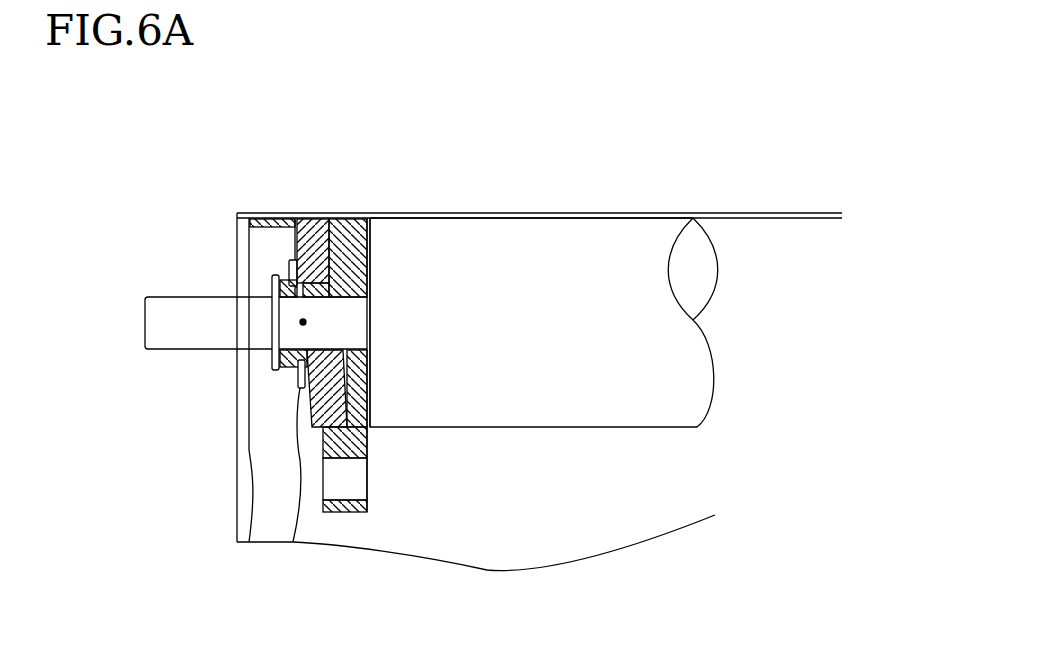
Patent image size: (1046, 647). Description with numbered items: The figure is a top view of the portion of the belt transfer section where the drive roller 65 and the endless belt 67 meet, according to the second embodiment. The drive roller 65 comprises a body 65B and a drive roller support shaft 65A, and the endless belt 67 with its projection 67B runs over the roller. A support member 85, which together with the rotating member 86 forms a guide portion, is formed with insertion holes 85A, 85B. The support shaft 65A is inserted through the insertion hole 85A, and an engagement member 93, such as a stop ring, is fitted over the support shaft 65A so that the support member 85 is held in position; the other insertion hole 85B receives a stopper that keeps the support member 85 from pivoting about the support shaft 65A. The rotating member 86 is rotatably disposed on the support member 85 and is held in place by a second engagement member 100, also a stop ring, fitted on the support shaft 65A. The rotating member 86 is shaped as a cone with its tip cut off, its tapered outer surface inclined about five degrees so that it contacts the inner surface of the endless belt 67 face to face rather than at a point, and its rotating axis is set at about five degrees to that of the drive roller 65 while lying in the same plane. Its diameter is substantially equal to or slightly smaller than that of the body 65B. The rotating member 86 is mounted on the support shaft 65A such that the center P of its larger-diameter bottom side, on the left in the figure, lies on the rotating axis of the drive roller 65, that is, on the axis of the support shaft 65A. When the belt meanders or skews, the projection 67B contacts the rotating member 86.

The drive roller 65 is at (431, 321).
The drive roller support shaft 65A is at (182, 307).
The body of the drive roller 65B is at (553, 237).
The endless belt 67 is at (782, 213).
The projection 67B is at (237, 240).
The support member 85 is at (340, 303).
The insertion hole 85A is at (370, 313).
The insertion hole 85B is at (347, 483).
The rotating member 86 is at (302, 300).
The engagement member 93 is at (297, 310).
The engagement member 100 is at (297, 388).
The center P is at (306, 322).